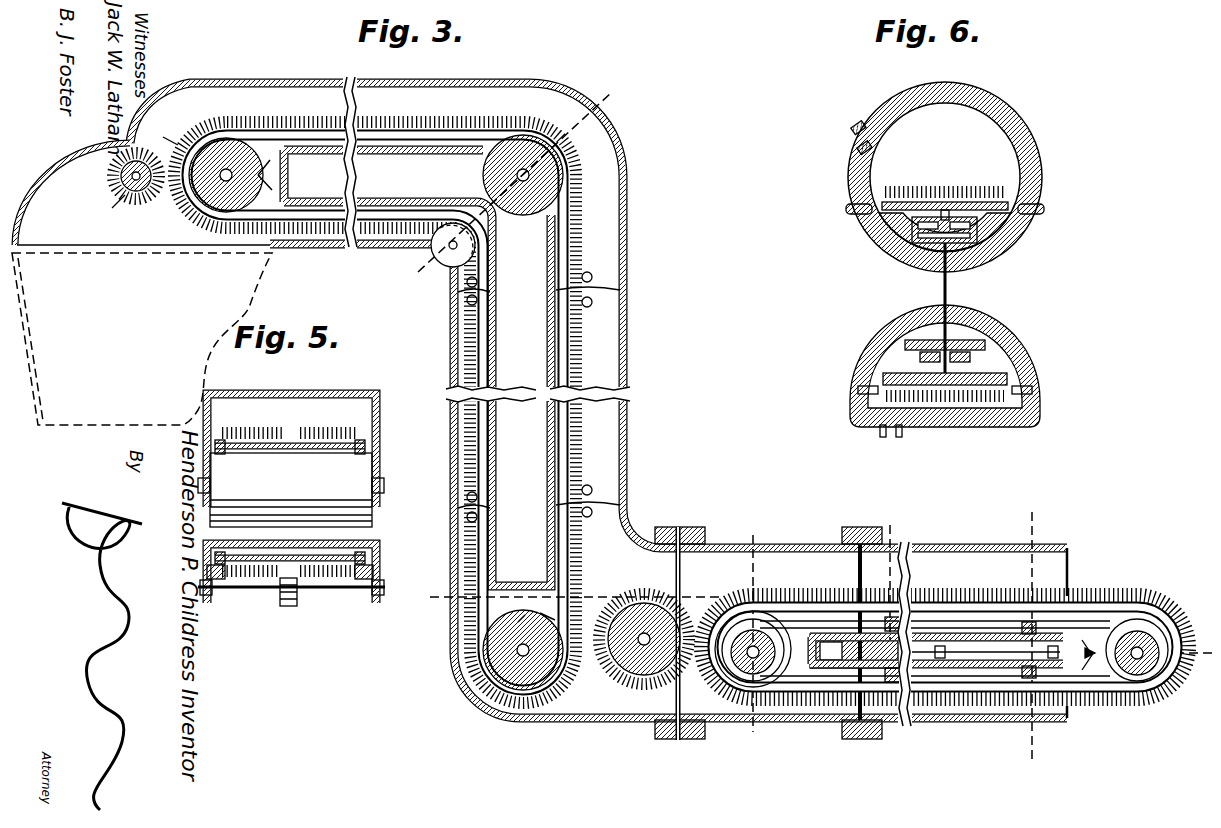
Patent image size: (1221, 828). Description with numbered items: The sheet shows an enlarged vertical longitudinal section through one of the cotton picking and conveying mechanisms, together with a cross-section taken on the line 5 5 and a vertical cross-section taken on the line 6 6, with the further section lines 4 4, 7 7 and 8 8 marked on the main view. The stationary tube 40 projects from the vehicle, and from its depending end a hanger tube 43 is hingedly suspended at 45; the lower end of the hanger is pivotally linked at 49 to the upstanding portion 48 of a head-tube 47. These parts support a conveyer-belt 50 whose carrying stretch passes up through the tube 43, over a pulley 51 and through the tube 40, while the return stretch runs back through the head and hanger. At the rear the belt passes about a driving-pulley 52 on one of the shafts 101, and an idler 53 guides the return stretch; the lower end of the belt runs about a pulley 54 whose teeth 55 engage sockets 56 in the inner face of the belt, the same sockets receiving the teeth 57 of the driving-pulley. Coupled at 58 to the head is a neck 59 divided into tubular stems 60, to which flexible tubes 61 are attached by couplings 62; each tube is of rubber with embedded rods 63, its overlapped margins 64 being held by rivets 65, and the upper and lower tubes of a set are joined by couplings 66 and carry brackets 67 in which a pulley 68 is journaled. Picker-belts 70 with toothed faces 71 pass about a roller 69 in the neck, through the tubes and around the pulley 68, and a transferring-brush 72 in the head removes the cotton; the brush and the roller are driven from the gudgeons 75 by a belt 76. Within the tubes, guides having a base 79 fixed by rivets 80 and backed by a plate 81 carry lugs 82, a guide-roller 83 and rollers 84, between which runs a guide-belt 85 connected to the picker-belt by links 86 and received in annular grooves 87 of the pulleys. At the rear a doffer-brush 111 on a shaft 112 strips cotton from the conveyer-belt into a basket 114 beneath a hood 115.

In FIG. 3, the tube 40 is at (450, 80).
In FIG. 5, the tube 40 is at (292, 392).
In FIG. 3, the tube 43 is at (610, 372).
In FIG. 3, the hinge 45 is at (455, 308).
In FIG. 3, the head-tube 47 is at (560, 718).
In FIG. 3, the upstanding portion 48 is at (606, 542).
In FIG. 3, the pivotal connection 49 is at (460, 512).
In FIG. 3, the conveyer-belt 50 is at (318, 220).
In FIG. 5, the conveyer-belt 50 is at (318, 448).
In FIG. 3, the pulley 51 is at (525, 212).
In FIG. 5, the pulley 51 is at (291, 490).
In FIG. 3, the driving-pulley 52 is at (192, 212).
In FIG. 3, the idler 53 is at (450, 252).
In FIG. 5, the idler 53 is at (290, 606).
In FIG. 3, the pulley 54 is at (482, 712).
In FIG. 3, the teeth 55 is at (536, 610).
In FIG. 5, the sockets 56 is at (222, 440).
In FIG. 3, the teeth 57 is at (268, 181).
In FIG. 3, the coupling 58 is at (674, 757).
In FIG. 3, the neck 59 is at (818, 546).
In FIG. 3, the tubular stem 60 is at (848, 560).
In FIG. 3, the flexible tube 61 is at (975, 548).
In FIG. 6, the flexible tube 61 is at (1030, 150).
In FIG. 3, the coupling 62 is at (858, 528).
In FIG. 6, the rod 63 is at (1012, 125).
In FIG. 6, the overlapped side margins 64 is at (852, 140).
In FIG. 6, the rivet 65 is at (858, 125).
In FIG. 3, the coupling 66 is at (996, 653).
In FIG. 6, the coupling 66 is at (946, 290).
In FIG. 3, the bracket 67 is at (1092, 640).
In FIG. 3, the pulley 68 is at (1132, 672).
In FIG. 3, the roller 69 is at (722, 690).
In FIG. 3, the picker-belt 70 is at (995, 620).
In FIG. 6, the picker-belt 70 is at (880, 203).
In FIG. 3, the toothed cotton-engaging face 71 is at (944, 604).
In FIG. 6, the toothed cotton-engaging face 71 is at (946, 183).
In FIG. 3, the transferring-brush 72 is at (628, 668).
In FIG. 3, the shaft or gudgeon 75 is at (642, 630).
In FIG. 3, the belt 76 is at (760, 655).
In FIG. 6, the supporting-base 79 is at (880, 252).
In FIG. 6, the rivet 80 is at (858, 216).
In FIG. 3, the plate 81 is at (992, 656).
In FIG. 6, the plate 81 is at (900, 262).
In FIG. 3, the lug 82 is at (892, 615).
In FIG. 6, the lug 82 is at (868, 245).
In FIG. 6, the guide-roller 83 is at (975, 250).
In FIG. 3, the roller 84 is at (1070, 740).
In FIG. 6, the roller 84 is at (912, 202).
In FIG. 3, the guide-belt 85 is at (970, 685).
In FIG. 6, the guide-belt 85 is at (915, 250).
In FIG. 6, the link 86 is at (960, 213).
In FIG. 3, the annular groove 87 is at (785, 640).
In FIG. 3, the shaft 101 is at (164, 133).
In FIG. 3, the doffer-brush 111 is at (103, 210).
In FIG. 3, the shaft 112 is at (120, 176).
In FIG. 3, the basket 114 is at (42, 340).
In FIG. 3, the hood 115 is at (142, 194).
In FIG. 3, the section line 4 4 is at (822, 625).
In FIG. 3, the section line 5 5 is at (512, 184).
In FIG. 3, the section line 6 6 is at (1032, 635).
In FIG. 3, the section line 7 7 is at (897, 582).
In FIG. 3, the section line 8 8 is at (752, 634).